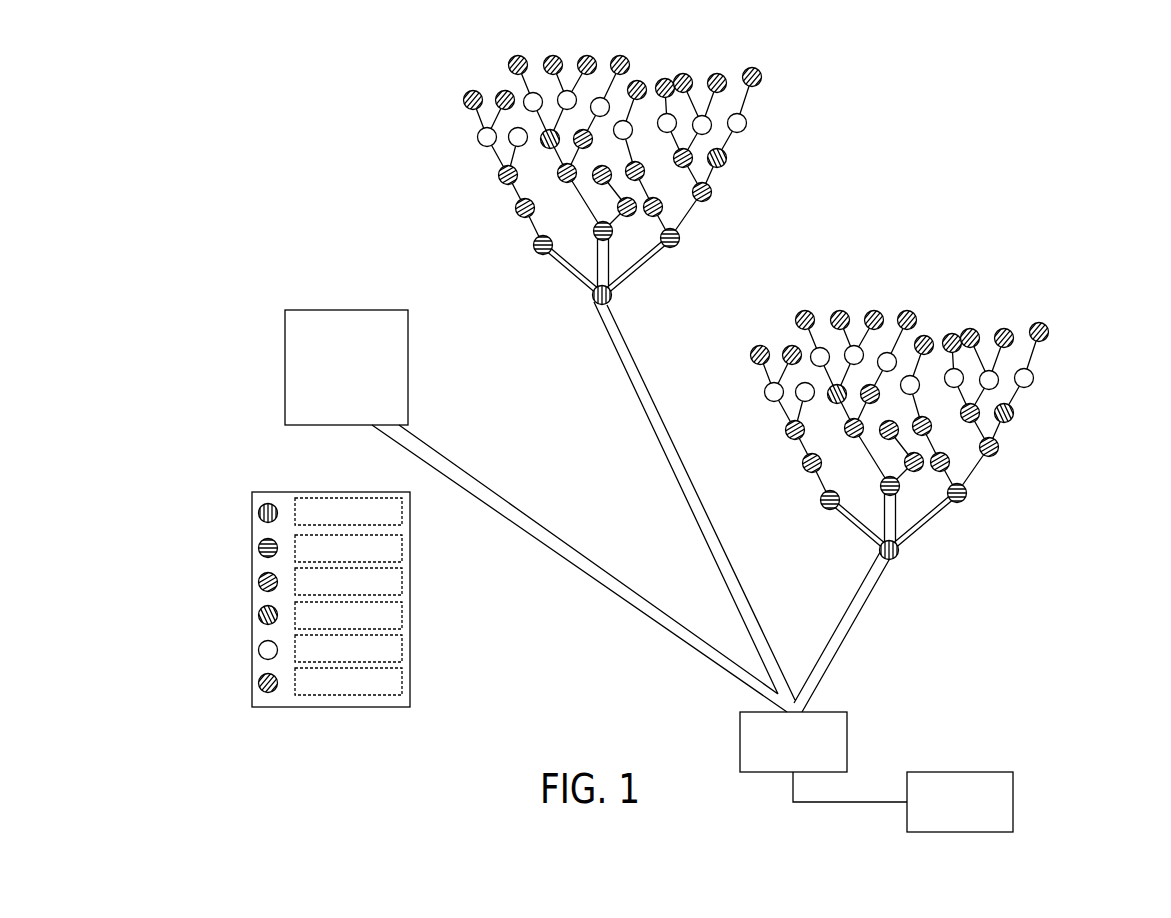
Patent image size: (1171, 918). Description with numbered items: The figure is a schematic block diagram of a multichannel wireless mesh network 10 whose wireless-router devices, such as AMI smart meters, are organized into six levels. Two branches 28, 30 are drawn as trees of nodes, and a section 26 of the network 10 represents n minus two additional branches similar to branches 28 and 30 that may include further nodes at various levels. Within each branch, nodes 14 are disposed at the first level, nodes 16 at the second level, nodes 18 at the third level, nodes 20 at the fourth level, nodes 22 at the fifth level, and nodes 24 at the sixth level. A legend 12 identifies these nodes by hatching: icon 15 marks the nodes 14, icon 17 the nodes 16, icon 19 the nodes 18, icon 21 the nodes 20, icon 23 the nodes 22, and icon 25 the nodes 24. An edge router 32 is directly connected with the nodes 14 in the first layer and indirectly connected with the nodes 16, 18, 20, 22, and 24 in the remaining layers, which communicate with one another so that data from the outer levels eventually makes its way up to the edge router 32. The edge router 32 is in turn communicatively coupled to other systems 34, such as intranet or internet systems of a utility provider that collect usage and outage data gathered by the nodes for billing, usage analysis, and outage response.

The multichannel wireless mesh network 10 is at (1047, 116).
The legend 12 is at (412, 600).
The nodes 14 is at (623, 307).
The icon 15 is at (261, 506).
The nodes 16 is at (693, 235).
The icon 17 is at (261, 541).
The nodes 18 is at (719, 191).
The icon 19 is at (261, 575).
The nodes 20 is at (739, 157).
The icon 21 is at (261, 608).
The nodes 22 is at (757, 122).
The icon 23 is at (261, 643).
The nodes 24 is at (768, 76).
The icon 25 is at (261, 676).
The section 26 is at (343, 310).
The branch 28 is at (563, 48).
The branch 30 is at (850, 305).
The edge router 32 is at (847, 738).
The other systems 34 is at (1013, 797).